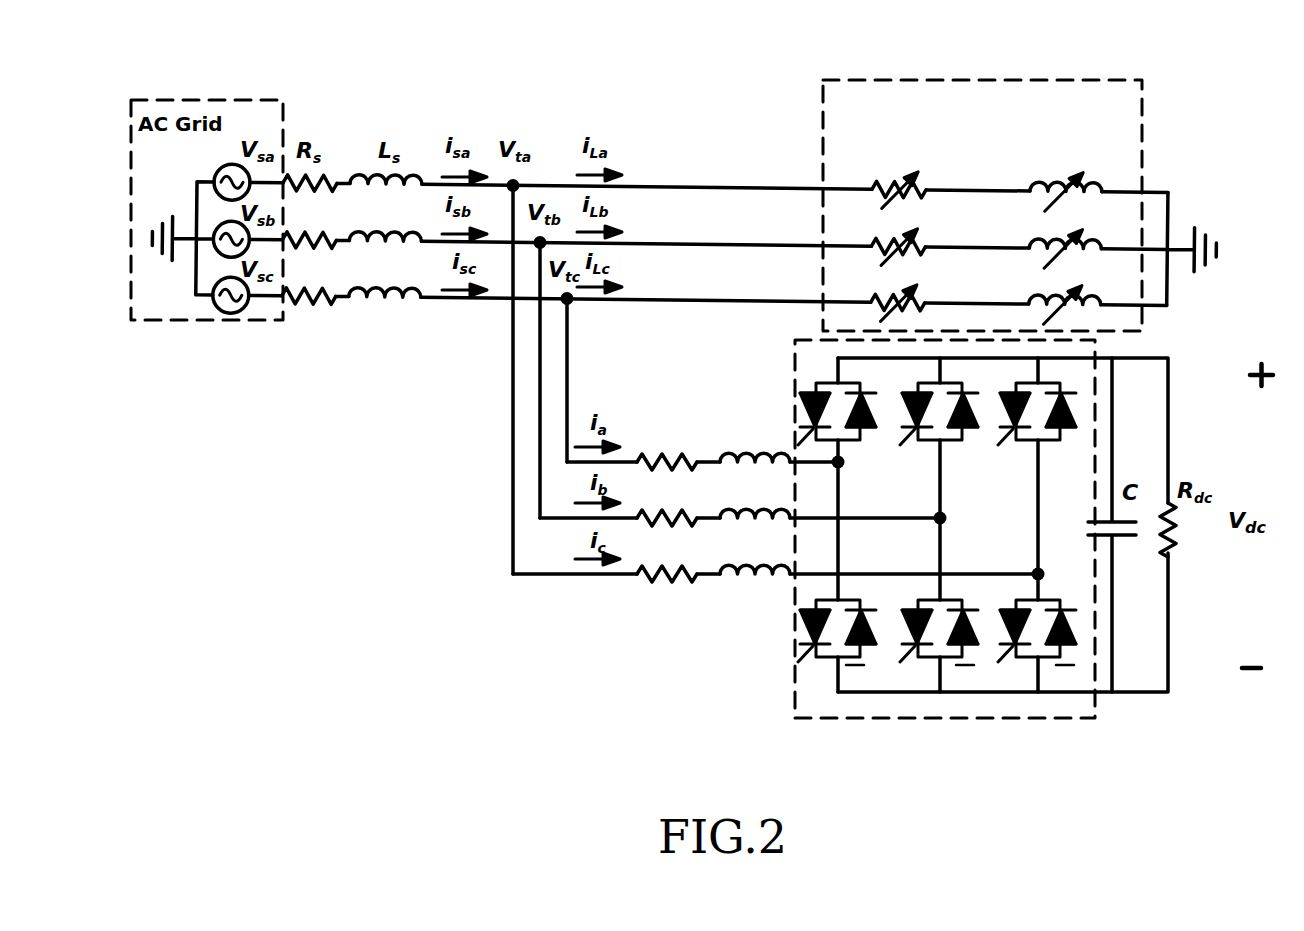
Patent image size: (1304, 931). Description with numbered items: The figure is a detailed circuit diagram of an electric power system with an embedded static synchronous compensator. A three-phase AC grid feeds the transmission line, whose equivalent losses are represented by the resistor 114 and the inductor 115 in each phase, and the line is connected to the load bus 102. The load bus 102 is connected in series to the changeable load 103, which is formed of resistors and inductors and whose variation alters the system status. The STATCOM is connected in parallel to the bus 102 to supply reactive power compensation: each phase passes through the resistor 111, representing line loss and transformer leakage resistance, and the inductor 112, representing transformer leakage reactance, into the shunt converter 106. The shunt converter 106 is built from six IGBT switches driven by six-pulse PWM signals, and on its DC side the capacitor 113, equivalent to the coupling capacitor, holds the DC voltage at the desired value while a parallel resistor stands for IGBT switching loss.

The bus 102 is at (500, 128).
The changeable load 103 is at (1008, 72).
The shunt converter 106 is at (1062, 728).
The resistor R 111 is at (653, 410).
The inductor L 112 is at (730, 410).
The capacitor C 113 is at (1130, 468).
The resistor 114 is at (310, 128).
The inductor L 115 is at (393, 128).